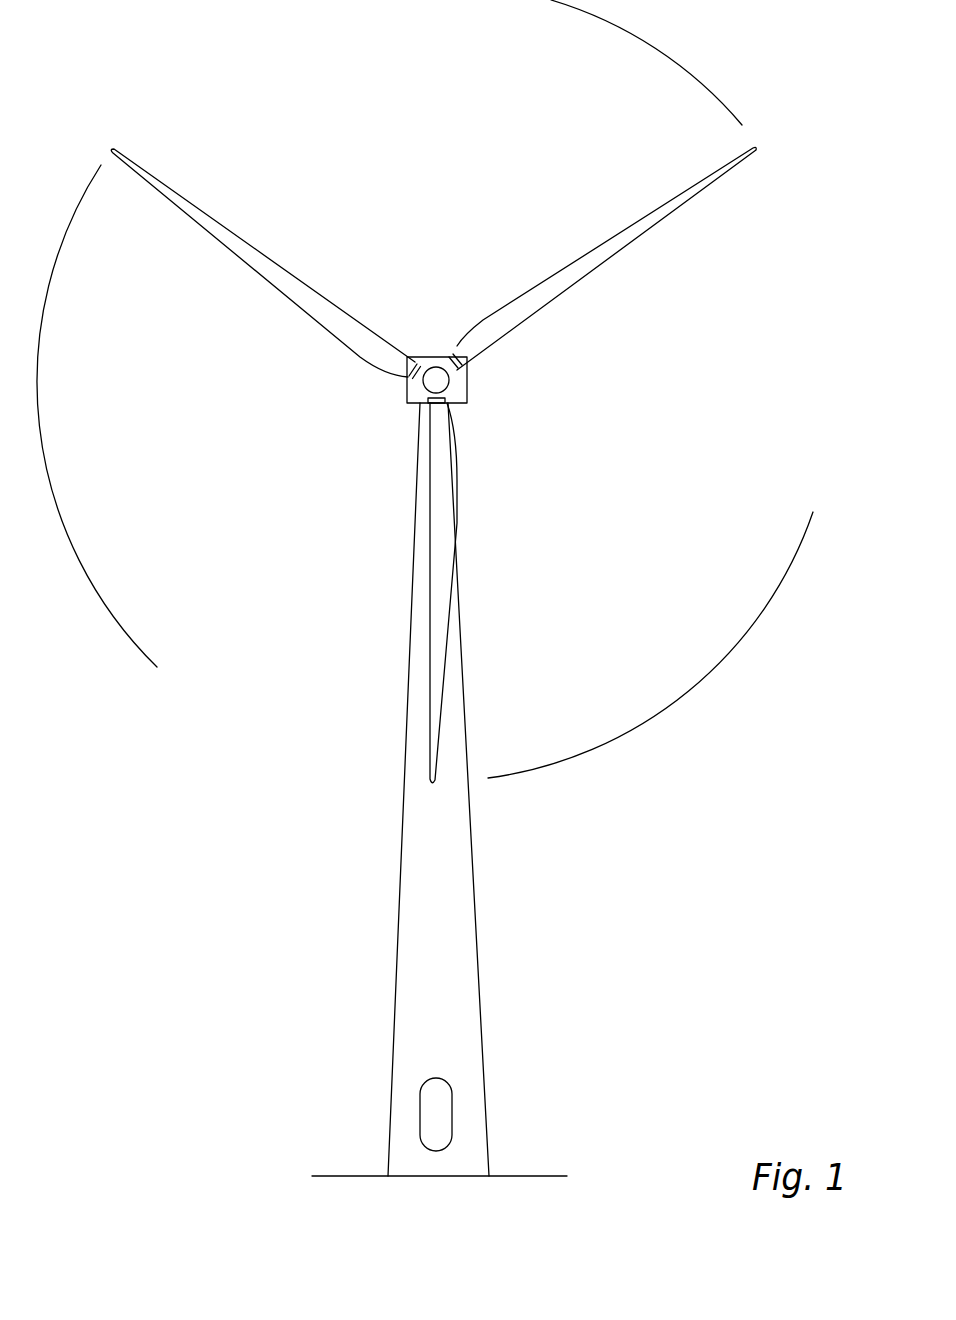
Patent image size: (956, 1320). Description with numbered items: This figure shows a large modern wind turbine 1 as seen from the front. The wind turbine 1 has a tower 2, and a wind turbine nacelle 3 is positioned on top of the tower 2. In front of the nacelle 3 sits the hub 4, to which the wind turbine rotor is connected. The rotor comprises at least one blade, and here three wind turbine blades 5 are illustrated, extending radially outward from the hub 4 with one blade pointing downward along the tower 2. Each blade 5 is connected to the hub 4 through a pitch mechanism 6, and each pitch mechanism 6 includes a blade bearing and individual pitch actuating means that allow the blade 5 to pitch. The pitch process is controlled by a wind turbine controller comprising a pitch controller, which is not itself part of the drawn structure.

The wind turbine 1 is at (425, 588).
The tower 2 is at (467, 870).
The wind turbine nacelle 3 is at (466, 402).
The hub 4 is at (436, 372).
The wind turbine blades 5 is at (260, 250).
The pitch mechanisms 6 is at (407, 378).